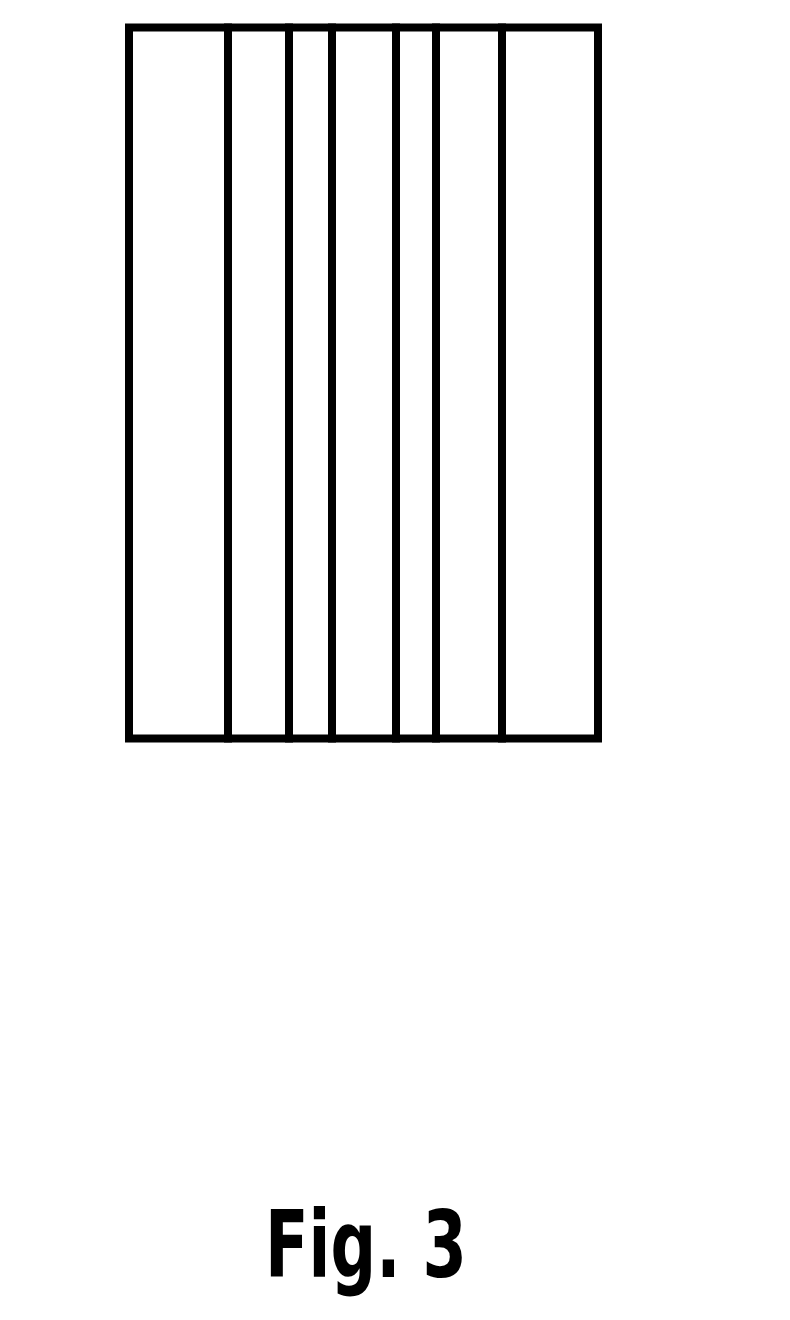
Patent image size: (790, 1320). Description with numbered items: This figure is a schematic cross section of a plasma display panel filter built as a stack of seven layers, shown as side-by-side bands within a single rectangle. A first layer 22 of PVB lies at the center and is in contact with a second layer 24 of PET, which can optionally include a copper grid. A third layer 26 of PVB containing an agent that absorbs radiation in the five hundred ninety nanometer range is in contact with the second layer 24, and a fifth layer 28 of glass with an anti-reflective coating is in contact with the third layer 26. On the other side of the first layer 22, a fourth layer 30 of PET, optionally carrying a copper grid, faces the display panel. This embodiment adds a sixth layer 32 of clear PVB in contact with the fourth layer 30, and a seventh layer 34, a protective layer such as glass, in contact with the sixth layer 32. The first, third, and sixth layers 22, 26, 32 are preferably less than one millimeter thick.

The first layer 22 is at (357, 702).
The second layer 24 is at (307, 695).
The third layer 26 is at (262, 702).
The fifth layer 28 is at (170, 698).
The fourth layer 30 is at (412, 688).
The sixth layer 32 is at (482, 710).
The seventh layer 34 is at (568, 703).